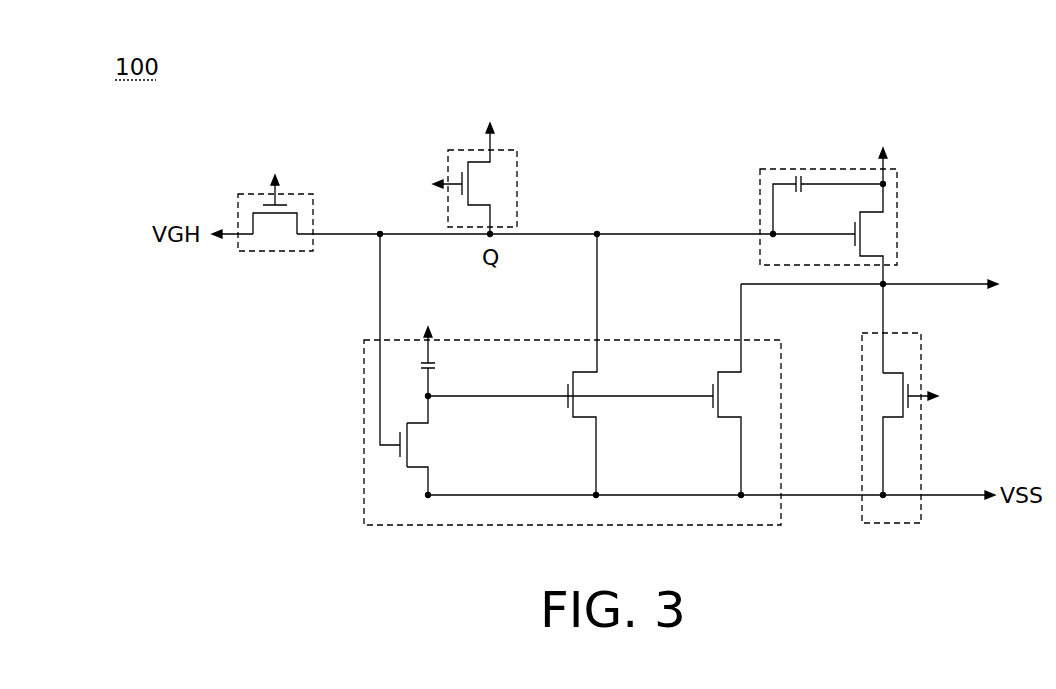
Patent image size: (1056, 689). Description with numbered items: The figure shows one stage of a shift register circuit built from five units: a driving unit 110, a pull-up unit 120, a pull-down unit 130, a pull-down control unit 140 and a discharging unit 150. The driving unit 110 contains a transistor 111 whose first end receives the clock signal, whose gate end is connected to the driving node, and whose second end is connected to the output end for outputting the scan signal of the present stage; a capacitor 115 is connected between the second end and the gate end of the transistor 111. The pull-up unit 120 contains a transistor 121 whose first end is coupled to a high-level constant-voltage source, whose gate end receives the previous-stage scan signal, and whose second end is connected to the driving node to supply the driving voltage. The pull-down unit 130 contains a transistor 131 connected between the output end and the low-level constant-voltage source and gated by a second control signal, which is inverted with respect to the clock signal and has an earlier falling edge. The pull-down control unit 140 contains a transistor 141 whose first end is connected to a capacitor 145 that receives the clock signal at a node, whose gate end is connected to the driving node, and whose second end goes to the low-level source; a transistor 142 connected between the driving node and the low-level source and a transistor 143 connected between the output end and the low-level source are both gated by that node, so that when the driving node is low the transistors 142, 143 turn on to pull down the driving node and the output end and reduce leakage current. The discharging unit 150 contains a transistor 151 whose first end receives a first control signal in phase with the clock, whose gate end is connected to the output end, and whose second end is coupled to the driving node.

The driving unit 110 is at (897, 200).
The transistor 111 is at (873, 262).
The capacitor 115 is at (798, 176).
The pull-up unit 120 is at (238, 215).
The transistor 121 is at (297, 222).
The pull-down unit 130 is at (900, 525).
The transistor 131 is at (893, 420).
The pull-down control unit 140 is at (395, 527).
The transistor 141 is at (420, 470).
The transistor 142 is at (585, 418).
The transistor 143 is at (730, 418).
The capacitor 145 is at (438, 366).
The discharging unit 150 is at (517, 170).
The transistor 151 is at (480, 206).